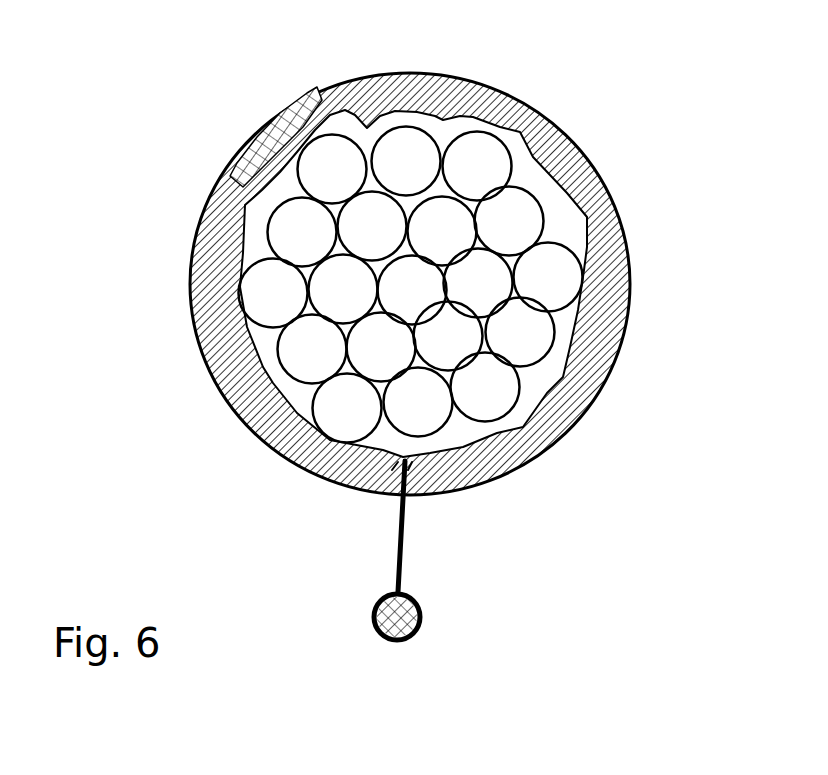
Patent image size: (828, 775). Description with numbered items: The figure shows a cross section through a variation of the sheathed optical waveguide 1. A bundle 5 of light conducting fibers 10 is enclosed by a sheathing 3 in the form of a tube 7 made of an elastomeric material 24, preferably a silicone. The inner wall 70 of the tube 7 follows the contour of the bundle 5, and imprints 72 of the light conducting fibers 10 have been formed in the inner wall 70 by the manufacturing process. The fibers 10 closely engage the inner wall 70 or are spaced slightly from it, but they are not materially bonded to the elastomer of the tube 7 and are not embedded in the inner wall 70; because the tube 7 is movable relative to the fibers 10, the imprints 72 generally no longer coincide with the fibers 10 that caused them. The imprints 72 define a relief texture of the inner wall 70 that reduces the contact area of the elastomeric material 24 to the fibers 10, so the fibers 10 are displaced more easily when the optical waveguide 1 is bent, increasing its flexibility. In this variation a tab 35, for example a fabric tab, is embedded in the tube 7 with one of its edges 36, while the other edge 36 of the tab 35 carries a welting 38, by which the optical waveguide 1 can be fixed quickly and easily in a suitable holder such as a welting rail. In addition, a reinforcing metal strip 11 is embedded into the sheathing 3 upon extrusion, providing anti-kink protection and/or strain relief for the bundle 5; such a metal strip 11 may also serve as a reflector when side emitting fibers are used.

The sheathed optical waveguide 1 is at (97, 456).
The sheathing 3 is at (211, 115).
The tube 7 is at (227, 153).
The bundle 5 is at (262, 339).
The light conducting fibers 10 is at (272, 292).
The metal strip 11 is at (211, 93).
The elastomeric material 24 is at (480, 462).
The tab 35 is at (400, 550).
The edge 36 is at (405, 461).
The welting 38 is at (422, 625).
The inner wall 70 is at (441, 121).
The imprints 72 is at (385, 117).